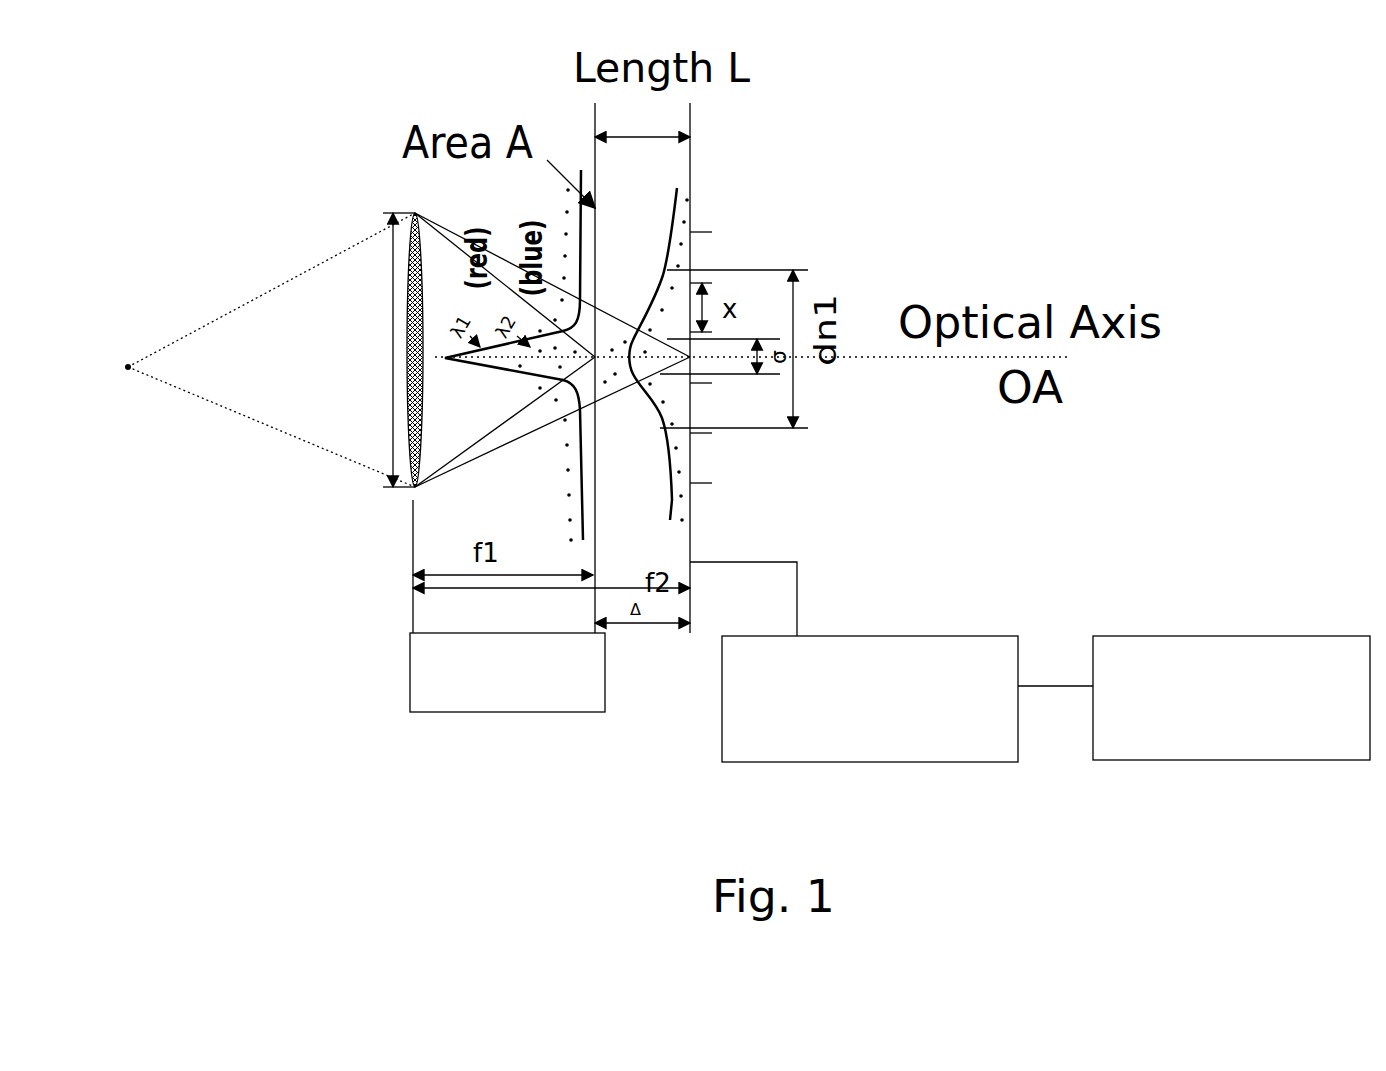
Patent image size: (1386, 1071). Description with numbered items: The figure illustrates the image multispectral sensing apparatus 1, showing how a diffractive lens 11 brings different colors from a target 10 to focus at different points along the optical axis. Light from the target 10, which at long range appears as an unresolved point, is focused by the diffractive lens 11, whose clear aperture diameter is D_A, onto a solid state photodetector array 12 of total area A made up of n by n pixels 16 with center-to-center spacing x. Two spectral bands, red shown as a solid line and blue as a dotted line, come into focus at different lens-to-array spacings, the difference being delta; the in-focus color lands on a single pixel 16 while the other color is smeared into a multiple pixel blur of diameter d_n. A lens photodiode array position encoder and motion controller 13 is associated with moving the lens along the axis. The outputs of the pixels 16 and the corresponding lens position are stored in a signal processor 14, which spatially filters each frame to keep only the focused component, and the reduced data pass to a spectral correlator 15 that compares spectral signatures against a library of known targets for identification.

The spectrometer system 1 is at (325, 463).
The target 10 is at (157, 419).
The diffractive lens or mirror 11 is at (405, 307).
The photodetector array 12 is at (598, 172).
The lens photodiode array position encoder and motion controller 13 is at (547, 712).
The signal processor 14 is at (854, 662).
The spectral correlator 15 is at (1194, 698).
The pixel 16 is at (695, 473).